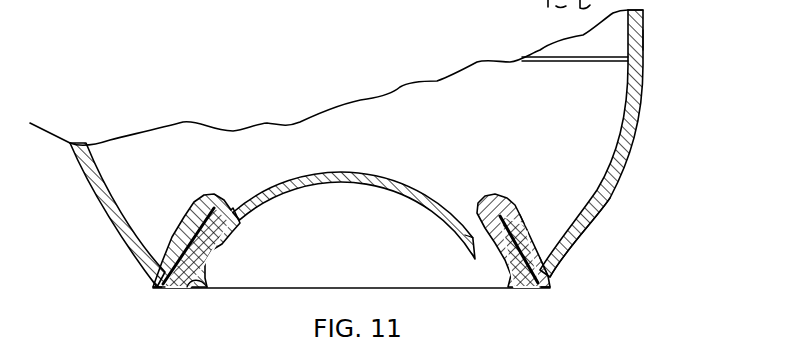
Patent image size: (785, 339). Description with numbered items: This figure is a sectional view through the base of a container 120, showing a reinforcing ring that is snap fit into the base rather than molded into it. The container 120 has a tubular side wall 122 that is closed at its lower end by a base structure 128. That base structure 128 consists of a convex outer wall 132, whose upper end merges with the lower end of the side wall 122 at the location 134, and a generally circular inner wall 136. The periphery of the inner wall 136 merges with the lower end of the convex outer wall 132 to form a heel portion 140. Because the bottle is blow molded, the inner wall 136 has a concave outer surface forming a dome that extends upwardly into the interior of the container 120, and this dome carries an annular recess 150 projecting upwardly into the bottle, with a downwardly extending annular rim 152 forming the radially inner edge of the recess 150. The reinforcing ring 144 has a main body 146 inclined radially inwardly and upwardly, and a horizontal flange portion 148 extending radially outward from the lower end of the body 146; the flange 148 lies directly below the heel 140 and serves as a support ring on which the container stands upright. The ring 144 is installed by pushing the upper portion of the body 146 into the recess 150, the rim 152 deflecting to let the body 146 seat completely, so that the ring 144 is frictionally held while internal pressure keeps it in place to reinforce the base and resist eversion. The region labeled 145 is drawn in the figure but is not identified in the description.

The container 120 is at (651, 40).
The tubular side wall 122 is at (644, 22).
The base structure 128 is at (611, 237).
The convex outer wall 132 is at (622, 185).
The merge location 134 is at (644, 64).
The inner wall 136 is at (340, 172).
The heel portion 140 is at (543, 263).
The reinforcing ring 144 is at (203, 287).
The chamber space 145 is at (134, 220).
The main body 146 is at (206, 257).
The horizontal flange portion 148 is at (157, 287).
The annular recess 150 is at (528, 230).
The annular rim 152 is at (480, 249).